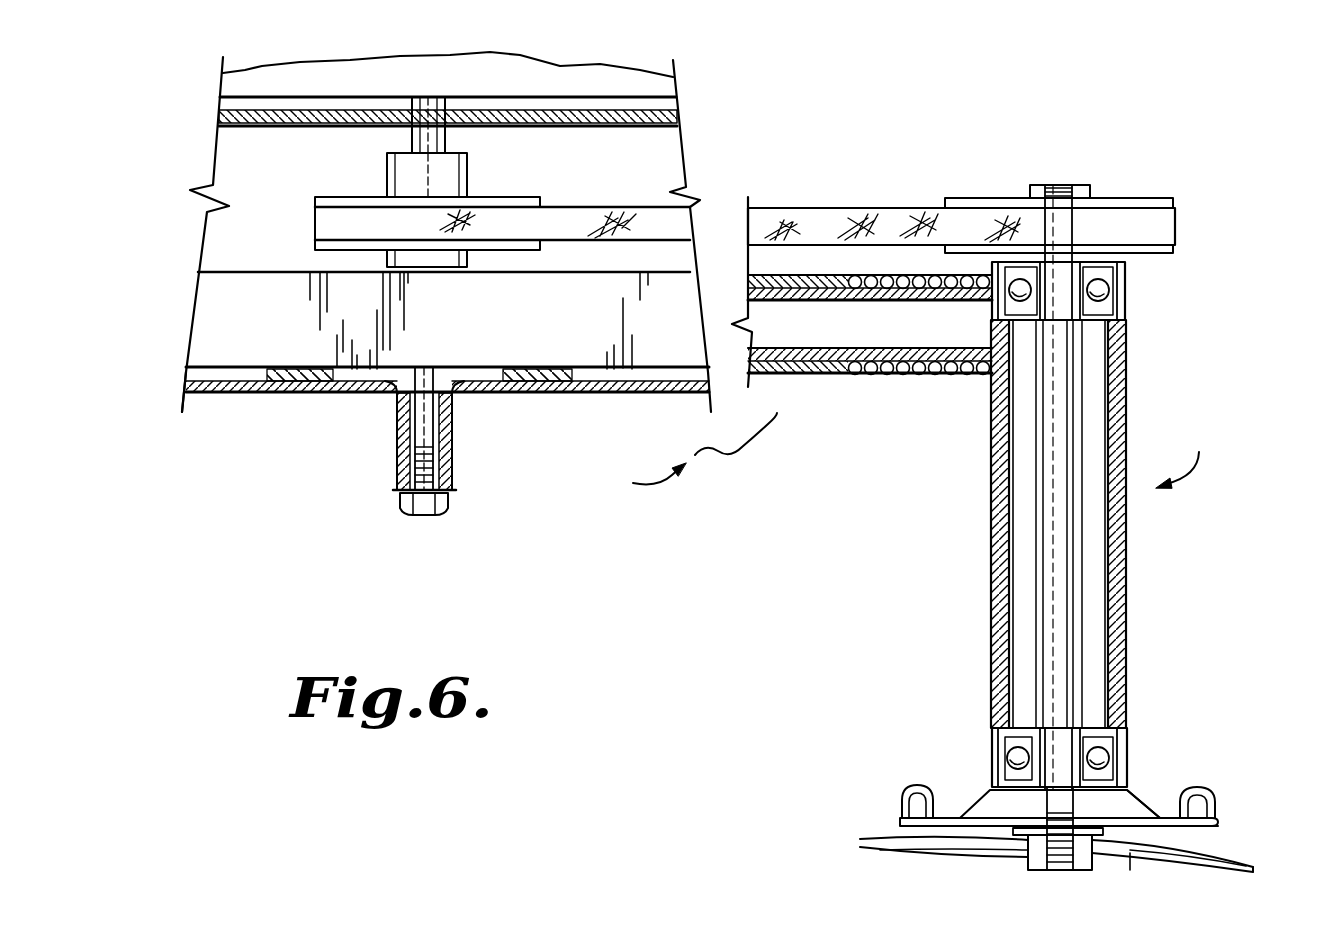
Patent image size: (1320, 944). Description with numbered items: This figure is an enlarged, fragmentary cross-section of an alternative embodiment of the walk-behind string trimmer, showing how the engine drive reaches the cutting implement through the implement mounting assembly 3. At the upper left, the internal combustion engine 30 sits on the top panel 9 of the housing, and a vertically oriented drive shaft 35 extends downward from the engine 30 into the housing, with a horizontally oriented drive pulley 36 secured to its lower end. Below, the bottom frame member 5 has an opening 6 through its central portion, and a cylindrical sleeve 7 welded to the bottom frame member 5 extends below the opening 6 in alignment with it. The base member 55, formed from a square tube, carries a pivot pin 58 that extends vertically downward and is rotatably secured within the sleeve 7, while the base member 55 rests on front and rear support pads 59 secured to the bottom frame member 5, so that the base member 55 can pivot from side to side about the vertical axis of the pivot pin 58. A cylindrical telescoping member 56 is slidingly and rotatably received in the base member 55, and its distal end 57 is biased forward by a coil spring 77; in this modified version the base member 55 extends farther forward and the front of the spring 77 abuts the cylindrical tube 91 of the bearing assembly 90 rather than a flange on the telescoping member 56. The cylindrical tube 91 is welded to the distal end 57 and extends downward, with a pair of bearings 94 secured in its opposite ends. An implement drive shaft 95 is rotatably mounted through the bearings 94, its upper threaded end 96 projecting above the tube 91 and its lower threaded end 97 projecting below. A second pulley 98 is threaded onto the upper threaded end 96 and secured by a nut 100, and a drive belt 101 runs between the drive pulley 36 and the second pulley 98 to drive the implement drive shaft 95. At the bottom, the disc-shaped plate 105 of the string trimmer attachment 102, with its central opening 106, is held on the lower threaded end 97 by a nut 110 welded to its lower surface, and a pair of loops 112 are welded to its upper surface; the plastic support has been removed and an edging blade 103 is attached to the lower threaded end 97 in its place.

The implement mounting assembly 3 is at (691, 453).
The bottom frame member 5 is at (203, 397).
The opening 6 is at (390, 409).
The cylindrical sleeve 7 is at (452, 450).
The top panel 9 is at (672, 128).
The internal combustion engine 30 is at (672, 88).
The drive shaft 35 is at (445, 134).
The drive pulley 36 is at (330, 197).
The base member 55 is at (272, 272).
The telescoping member 56 is at (805, 375).
The distal end 57 is at (977, 377).
The pivot pin 58 is at (412, 430).
The support pads 59 is at (271, 394).
The coil spring 77 is at (918, 376).
The bearing assembly 90 is at (1185, 455).
The cylindrical tube 91 is at (991, 540).
The bearings 94 is at (1118, 312).
The implement drive shaft 95 is at (1077, 560).
The upper threaded end 96 is at (1048, 185).
The lower threaded end 97 is at (1056, 870).
The second pulley 98 is at (1174, 200).
The nut 100 is at (1090, 190).
The drive belt 101 is at (820, 208).
The string trimmer attachment 102 is at (976, 800).
The edging blade 103 is at (866, 840).
The disc-shaped plate 105 is at (1218, 822).
The opening 106 is at (1118, 795).
The nut 110 is at (1081, 866).
The loops 112 is at (906, 792).